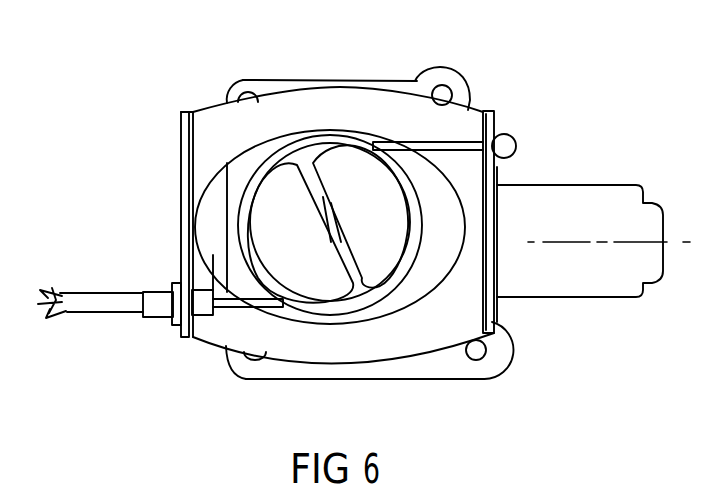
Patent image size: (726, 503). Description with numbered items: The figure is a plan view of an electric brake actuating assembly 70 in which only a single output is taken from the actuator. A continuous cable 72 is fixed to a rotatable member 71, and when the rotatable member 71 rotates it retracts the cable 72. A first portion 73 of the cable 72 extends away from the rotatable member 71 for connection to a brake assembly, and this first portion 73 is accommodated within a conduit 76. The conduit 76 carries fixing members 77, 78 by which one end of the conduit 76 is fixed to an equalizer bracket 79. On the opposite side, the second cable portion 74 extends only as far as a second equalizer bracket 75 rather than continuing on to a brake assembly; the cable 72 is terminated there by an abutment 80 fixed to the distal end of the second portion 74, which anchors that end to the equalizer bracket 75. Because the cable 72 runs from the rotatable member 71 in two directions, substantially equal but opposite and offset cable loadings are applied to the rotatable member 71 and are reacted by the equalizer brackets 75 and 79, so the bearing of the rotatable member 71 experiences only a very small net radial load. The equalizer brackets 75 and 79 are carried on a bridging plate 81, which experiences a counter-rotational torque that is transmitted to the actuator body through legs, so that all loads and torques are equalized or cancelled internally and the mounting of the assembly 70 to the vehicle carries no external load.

The electric brake actuating assembly 70 is at (547, 93).
The rotatable member 71 is at (373, 247).
The cable 72 is at (422, 158).
The first portion 73 is at (213, 313).
The second cable portion 74 is at (447, 140).
The equalizer bracket 75 is at (496, 121).
The conduit 76 is at (82, 310).
The connector block 77 is at (153, 315).
The fixing member 78 is at (206, 290).
The equalizer bracket 79 is at (185, 142).
The abutment 80 is at (516, 151).
The bridging plate 81 is at (282, 112).